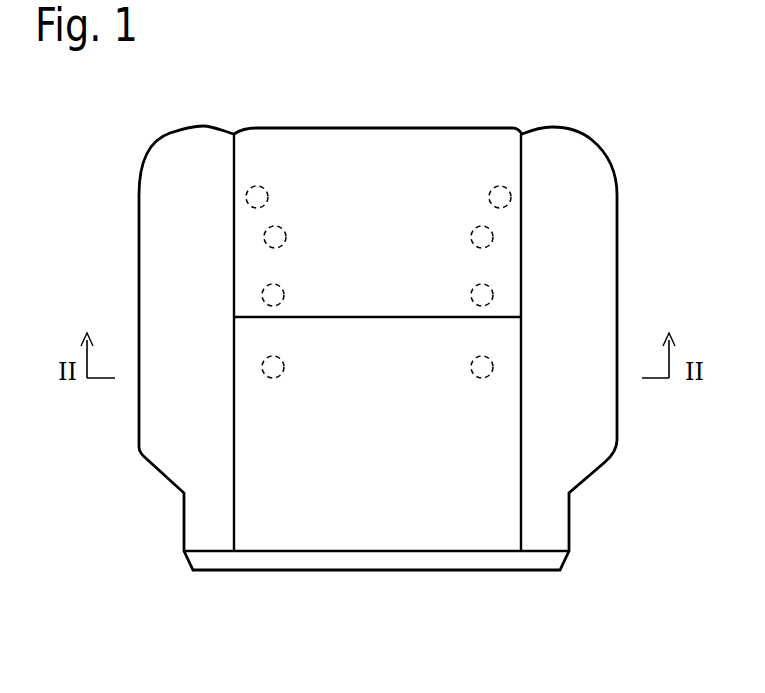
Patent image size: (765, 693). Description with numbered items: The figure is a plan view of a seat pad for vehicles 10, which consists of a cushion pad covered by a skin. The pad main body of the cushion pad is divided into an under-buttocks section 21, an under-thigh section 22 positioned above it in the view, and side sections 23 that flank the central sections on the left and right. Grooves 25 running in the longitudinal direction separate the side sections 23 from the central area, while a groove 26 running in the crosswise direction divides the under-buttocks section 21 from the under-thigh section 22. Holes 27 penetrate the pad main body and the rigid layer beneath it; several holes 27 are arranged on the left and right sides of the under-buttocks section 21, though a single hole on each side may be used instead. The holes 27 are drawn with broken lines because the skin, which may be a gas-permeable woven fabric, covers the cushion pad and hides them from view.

The seat pad for vehicles 10 is at (531, 107).
The under-buttocks section 21 is at (331, 466).
The under-thigh section 22 is at (348, 234).
The side sections 23 is at (167, 398).
The grooves in a longitudinal direction 25 is at (234, 438).
The grooves in a crosswise direction 26 is at (337, 318).
The holes 27 is at (267, 190).